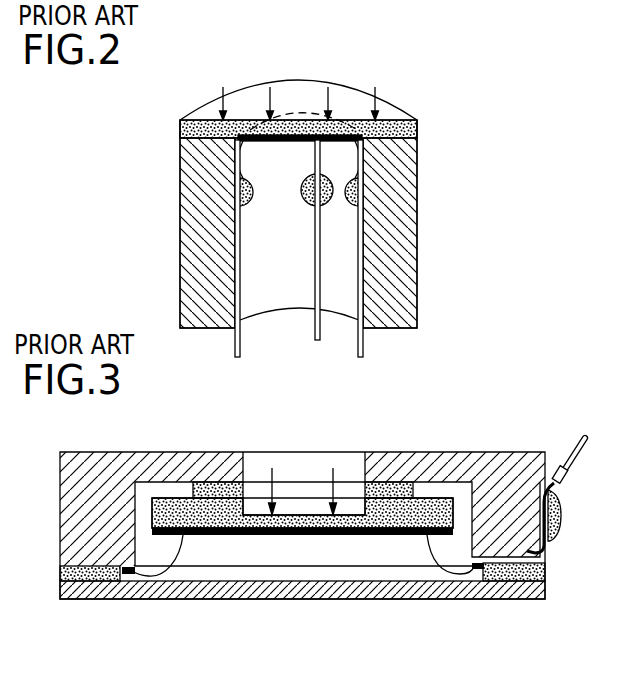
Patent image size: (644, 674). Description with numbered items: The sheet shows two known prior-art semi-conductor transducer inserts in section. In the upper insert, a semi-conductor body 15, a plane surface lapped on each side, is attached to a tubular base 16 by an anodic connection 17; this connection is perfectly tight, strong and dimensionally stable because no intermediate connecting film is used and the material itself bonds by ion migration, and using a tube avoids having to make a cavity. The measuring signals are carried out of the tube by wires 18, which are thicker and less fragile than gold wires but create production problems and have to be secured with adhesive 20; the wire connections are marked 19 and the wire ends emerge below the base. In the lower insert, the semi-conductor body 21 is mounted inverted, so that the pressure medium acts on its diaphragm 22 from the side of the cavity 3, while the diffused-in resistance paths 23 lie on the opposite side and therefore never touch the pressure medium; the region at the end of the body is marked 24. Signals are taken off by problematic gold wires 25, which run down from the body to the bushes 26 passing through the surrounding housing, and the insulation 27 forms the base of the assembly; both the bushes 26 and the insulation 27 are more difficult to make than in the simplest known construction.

In FIG. 2, the semi-conductor body 15 is at (415, 126).
In FIG. 2, the tubular base 16 is at (403, 242).
In FIG. 2, the anodic connection 17 is at (180, 127).
In FIG. 2, the wires 18 is at (238, 343).
In FIG. 2, the bonding wires 19 is at (314, 142).
In FIG. 2, the adhesive 20 is at (248, 208).
In FIG. 3, the cavity 3 is at (347, 506).
In FIG. 3, the semi-conductor body 21 is at (422, 530).
In FIG. 3, the diaphragm 22 is at (301, 536).
In FIG. 3, the resistance paths 23 is at (348, 536).
In FIG. 3, the bonding pad 24 is at (416, 537).
In FIG. 3, the gold wires 25 is at (171, 566).
In FIG. 3, the bushes 26 is at (529, 552).
In FIG. 3, the insulation 27 is at (522, 578).